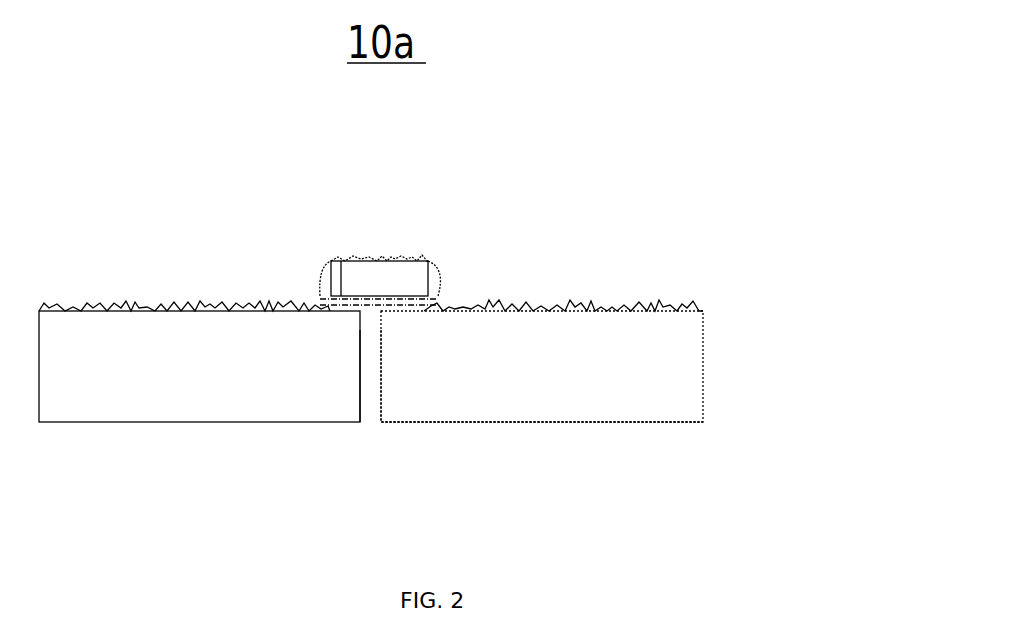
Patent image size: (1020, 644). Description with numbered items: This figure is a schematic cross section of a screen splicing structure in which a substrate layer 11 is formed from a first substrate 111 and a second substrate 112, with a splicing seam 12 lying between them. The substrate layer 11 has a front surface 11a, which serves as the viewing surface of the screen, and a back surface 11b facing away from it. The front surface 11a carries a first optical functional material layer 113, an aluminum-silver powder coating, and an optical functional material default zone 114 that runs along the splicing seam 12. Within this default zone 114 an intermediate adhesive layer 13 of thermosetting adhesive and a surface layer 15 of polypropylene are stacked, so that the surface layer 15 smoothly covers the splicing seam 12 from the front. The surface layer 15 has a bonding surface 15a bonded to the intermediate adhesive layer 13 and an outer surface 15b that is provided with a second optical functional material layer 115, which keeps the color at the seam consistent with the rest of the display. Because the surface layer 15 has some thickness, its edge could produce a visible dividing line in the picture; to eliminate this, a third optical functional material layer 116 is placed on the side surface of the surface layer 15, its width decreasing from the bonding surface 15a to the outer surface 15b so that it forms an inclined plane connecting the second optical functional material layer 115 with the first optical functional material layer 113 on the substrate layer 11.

The substrate layer 11 is at (460, 362).
The front surface 11a is at (634, 292).
The back surface 11b is at (560, 423).
The first substrate 111 is at (690, 378).
The second substrate 112 is at (60, 388).
The first optical functional material layer 113 is at (165, 300).
The optical functional material default zone 114 is at (312, 288).
The second optical functional material layer 115 is at (358, 257).
The third optical functional material layer 116 is at (430, 277).
The splicing seam 12 is at (372, 410).
The intermediate adhesive layer 13 is at (445, 291).
The surface layer 15 is at (364, 227).
The bonding surface 15a is at (338, 257).
The outer surface 15b is at (378, 246).